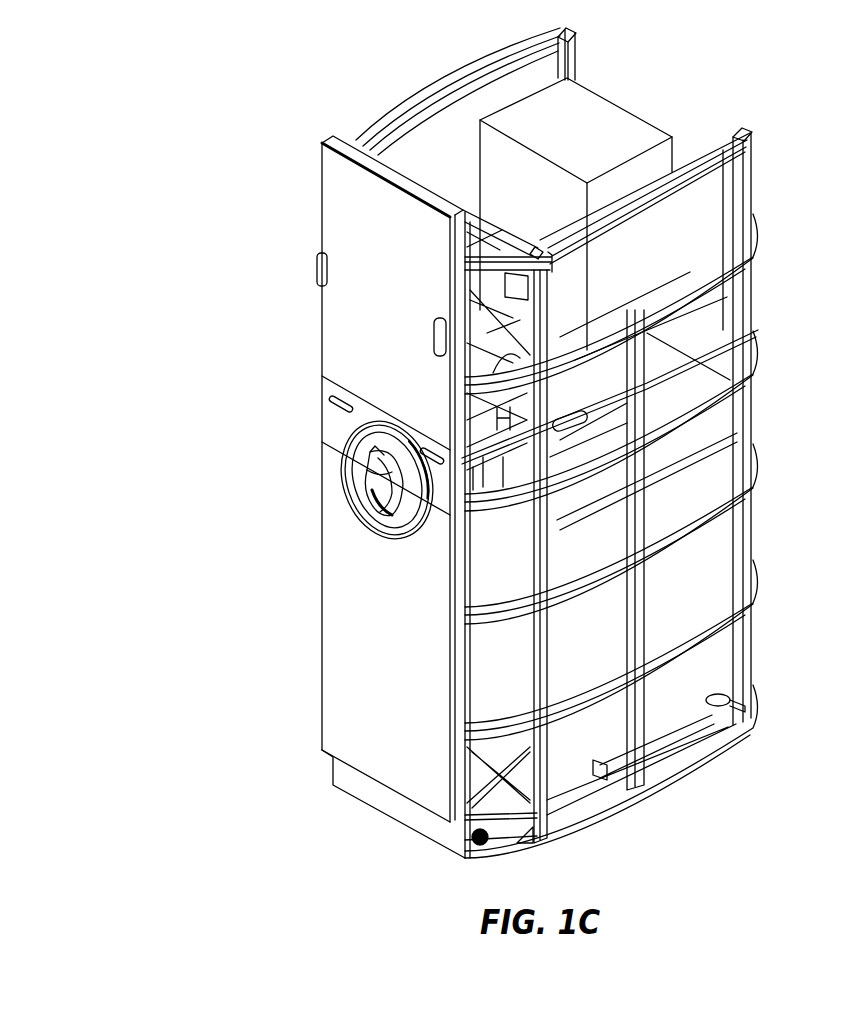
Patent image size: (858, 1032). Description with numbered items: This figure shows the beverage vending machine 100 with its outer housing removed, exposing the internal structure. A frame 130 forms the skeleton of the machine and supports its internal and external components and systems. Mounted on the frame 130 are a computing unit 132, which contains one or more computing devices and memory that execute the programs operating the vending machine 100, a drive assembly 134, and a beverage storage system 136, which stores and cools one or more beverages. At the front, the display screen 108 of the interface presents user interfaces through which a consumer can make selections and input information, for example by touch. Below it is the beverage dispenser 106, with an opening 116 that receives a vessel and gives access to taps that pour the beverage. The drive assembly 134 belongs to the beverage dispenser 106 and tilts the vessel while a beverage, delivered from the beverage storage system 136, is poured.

The vending machine 100 is at (198, 152).
The beverage dispenser 106 is at (343, 458).
The display screen 108 is at (400, 244).
The opening 116 is at (383, 475).
The frame 130 is at (573, 57).
The computing unit 132 is at (660, 127).
The drive assembly 134 is at (577, 387).
The beverage storage system 136 is at (712, 457).